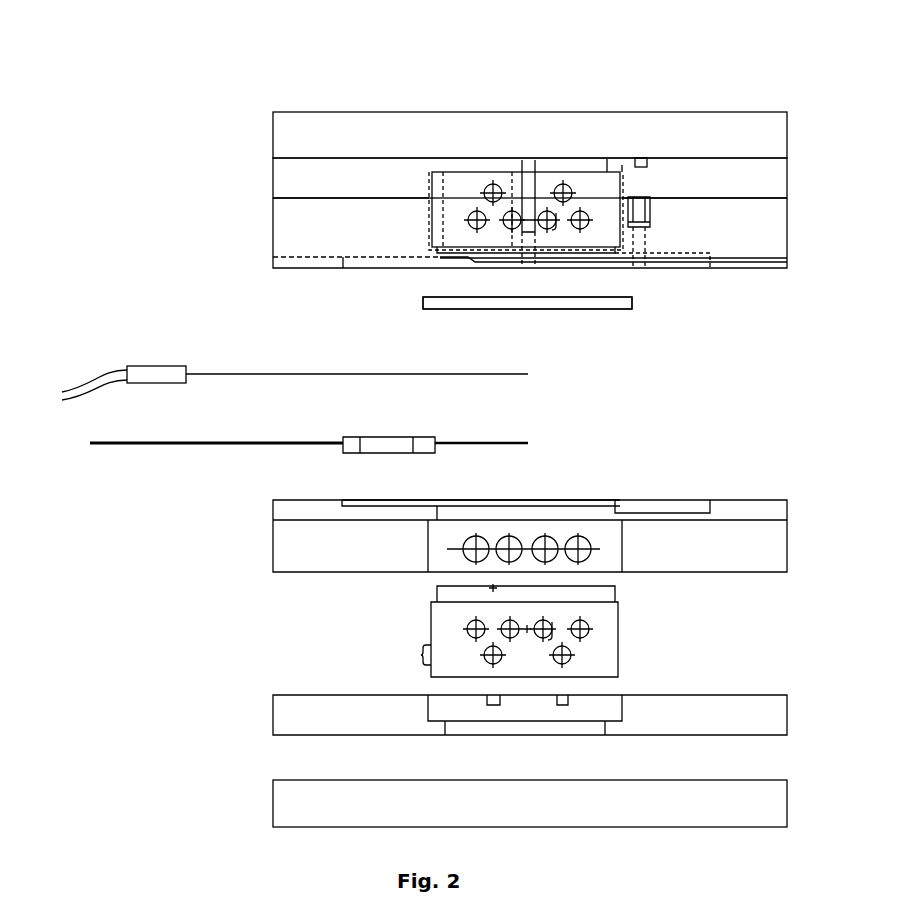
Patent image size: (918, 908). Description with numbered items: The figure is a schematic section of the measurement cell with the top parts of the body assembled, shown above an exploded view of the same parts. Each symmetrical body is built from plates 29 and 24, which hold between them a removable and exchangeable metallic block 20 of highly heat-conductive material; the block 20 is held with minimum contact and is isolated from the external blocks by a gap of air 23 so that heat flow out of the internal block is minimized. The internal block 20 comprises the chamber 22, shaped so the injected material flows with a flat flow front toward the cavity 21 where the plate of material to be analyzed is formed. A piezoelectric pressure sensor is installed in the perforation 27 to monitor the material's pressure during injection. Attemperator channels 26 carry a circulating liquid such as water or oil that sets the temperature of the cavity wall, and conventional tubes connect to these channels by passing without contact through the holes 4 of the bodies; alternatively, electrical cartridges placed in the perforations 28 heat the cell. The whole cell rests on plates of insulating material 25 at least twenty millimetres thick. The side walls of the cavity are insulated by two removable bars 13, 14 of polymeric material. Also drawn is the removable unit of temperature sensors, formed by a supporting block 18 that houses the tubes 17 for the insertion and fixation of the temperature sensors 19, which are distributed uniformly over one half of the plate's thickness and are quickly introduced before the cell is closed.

The holes 4 is at (572, 549).
The removable bar 13 is at (375, 307).
The removable bar 14 is at (415, 317).
The tubes 17 is at (435, 438).
The supporting block 18 is at (340, 447).
The temperature sensors 19 is at (485, 440).
The metallic block 20 is at (400, 188).
The cavity 21 is at (540, 500).
The chamber 22 is at (650, 493).
The gap of air 23 is at (578, 183).
The plate 24 is at (262, 181).
The plate of insulating material 25 is at (262, 138).
The attemperator channels 26 is at (558, 224).
The perforation 27 is at (605, 205).
The perforations 28 is at (512, 180).
The plate 29 is at (262, 239).